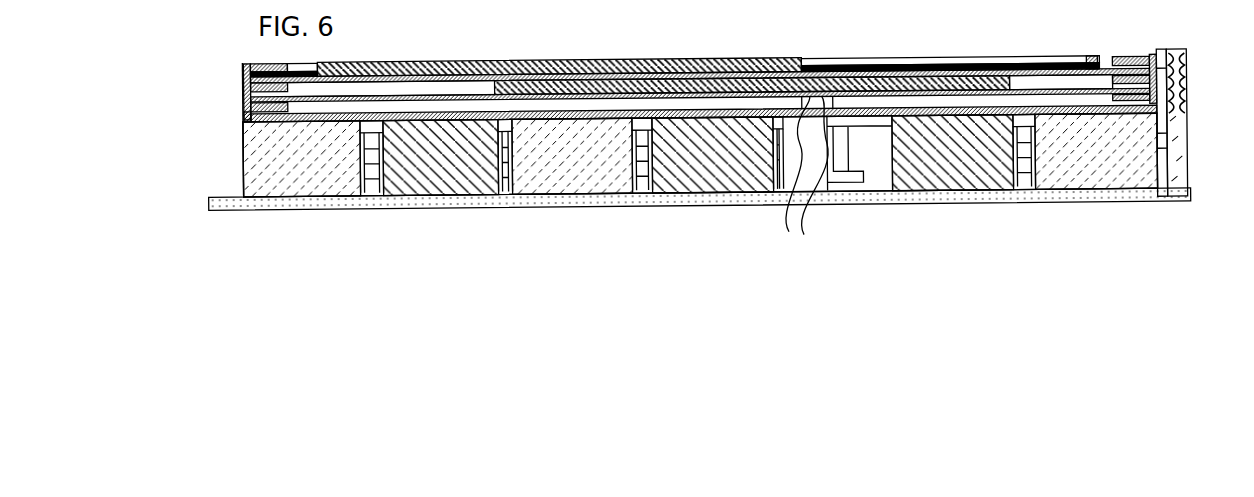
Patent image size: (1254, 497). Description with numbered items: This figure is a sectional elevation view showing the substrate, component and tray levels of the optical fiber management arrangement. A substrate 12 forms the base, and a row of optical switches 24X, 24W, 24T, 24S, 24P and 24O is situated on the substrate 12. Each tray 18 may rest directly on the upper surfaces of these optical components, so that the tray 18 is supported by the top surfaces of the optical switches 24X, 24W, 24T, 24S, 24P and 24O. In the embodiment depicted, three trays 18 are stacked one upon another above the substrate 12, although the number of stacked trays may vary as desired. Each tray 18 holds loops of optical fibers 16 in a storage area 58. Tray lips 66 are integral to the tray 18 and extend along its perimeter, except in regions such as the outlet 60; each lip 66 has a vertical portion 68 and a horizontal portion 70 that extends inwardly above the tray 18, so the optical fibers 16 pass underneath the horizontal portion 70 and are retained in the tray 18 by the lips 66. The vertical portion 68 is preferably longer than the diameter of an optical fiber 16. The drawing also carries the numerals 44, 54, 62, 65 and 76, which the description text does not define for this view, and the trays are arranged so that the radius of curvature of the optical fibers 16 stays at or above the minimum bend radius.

The substrate 12 is at (200, 212).
The optical fibers 16 is at (243, 68).
The tray 18 is at (733, 16).
The optical switch 24X is at (315, 188).
The optical switch 24W is at (427, 188).
The optical switch 24T is at (573, 193).
The optical switch 24S is at (690, 193).
The optical switch 24P is at (940, 177).
The optical switch 24O is at (1088, 177).
The connector 44 is at (864, 54).
The intermediate layer 54 is at (388, 62).
The storage area 58 is at (402, 38).
The outlet 60 is at (950, 36).
The dark strip 62 is at (674, 38).
The left spacer 65 is at (243, 120).
The tray lip 66 is at (257, 60).
The vertical portion 68 is at (1188, 56).
The horizontal portion 70 is at (244, 114).
The spacer 76 is at (1093, 110).